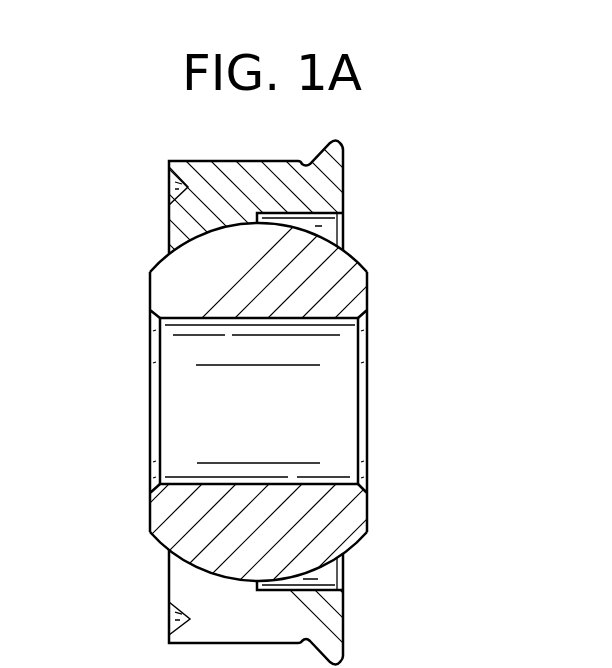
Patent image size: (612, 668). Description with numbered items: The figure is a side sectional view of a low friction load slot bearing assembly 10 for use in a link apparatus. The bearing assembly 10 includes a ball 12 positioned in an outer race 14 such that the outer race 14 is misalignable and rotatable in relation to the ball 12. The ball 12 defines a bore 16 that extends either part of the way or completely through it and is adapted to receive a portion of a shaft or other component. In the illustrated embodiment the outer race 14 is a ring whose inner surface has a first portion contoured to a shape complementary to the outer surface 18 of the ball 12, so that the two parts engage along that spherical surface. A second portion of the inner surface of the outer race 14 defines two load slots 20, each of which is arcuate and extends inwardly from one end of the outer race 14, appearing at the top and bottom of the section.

The bearing assembly 10 is at (113, 145).
The ball 12 is at (150, 519).
The outer race 14 is at (191, 163).
The bore 16 is at (330, 368).
The outer surface 18 is at (160, 262).
The load slot 20 is at (330, 226).